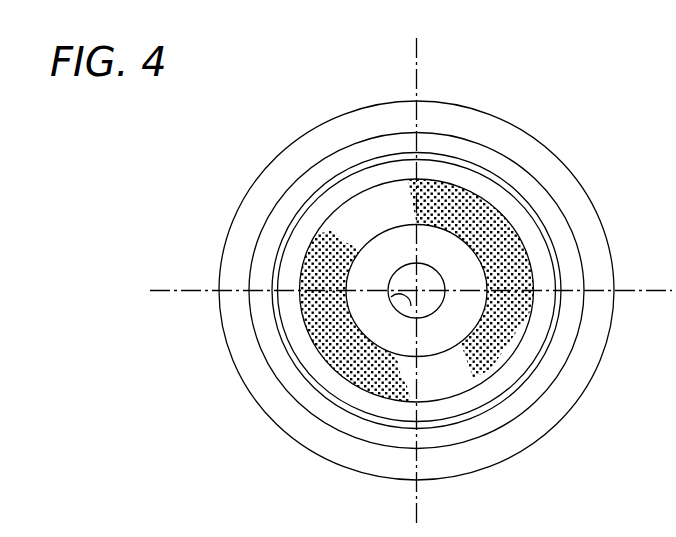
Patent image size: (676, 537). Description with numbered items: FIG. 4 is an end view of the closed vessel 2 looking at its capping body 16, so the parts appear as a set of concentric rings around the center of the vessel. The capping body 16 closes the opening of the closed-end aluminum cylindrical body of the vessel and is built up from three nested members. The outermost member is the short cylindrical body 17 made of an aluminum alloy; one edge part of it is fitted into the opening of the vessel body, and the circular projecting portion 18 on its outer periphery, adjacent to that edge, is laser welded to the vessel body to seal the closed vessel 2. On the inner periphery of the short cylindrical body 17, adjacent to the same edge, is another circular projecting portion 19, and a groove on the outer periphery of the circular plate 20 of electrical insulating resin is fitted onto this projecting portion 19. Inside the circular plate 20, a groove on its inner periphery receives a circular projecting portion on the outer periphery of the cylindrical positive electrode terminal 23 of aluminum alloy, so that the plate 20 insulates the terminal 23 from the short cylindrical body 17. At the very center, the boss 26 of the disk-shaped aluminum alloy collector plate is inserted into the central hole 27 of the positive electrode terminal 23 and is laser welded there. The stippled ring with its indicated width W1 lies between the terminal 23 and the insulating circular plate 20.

The closed vessel 2 is at (620, 133).
The capping body 16 is at (519, 147).
The short cylindrical body 17 is at (277, 175).
The circular projecting portion 18 is at (340, 119).
The circular projecting portion 19 is at (290, 267).
The circular plate 20 is at (332, 340).
The cylindrical positive electrode terminal 23 is at (453, 368).
The boss 26 is at (431, 277).
The central hole 27 is at (411, 306).
The width of hatched region W1 is at (453, 302).